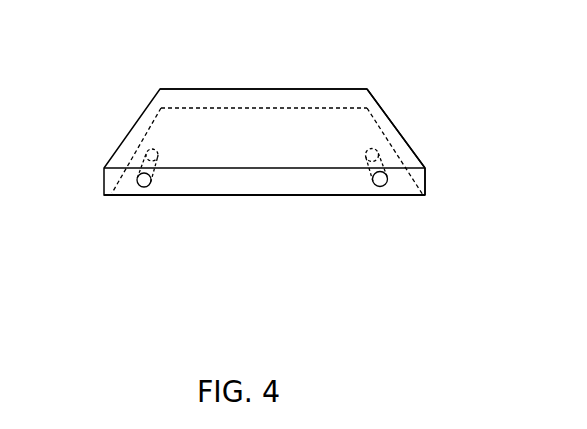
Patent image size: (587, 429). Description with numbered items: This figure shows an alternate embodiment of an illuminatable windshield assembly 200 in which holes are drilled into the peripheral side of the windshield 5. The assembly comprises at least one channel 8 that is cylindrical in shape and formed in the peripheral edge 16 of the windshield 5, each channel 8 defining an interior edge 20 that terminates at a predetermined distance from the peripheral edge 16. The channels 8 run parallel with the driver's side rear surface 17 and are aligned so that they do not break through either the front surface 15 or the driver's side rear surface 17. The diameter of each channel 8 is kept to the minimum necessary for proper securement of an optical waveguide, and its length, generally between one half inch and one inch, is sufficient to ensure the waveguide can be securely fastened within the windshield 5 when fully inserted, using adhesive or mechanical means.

The windshield assembly 200 is at (187, 78).
The windshield 5 is at (384, 88).
The driver's side rear surface 17 is at (283, 145).
The interior edge 20 is at (146, 176).
The front surface 15 is at (235, 203).
The peripheral edge 16 is at (407, 186).
The channel 8 is at (377, 203).